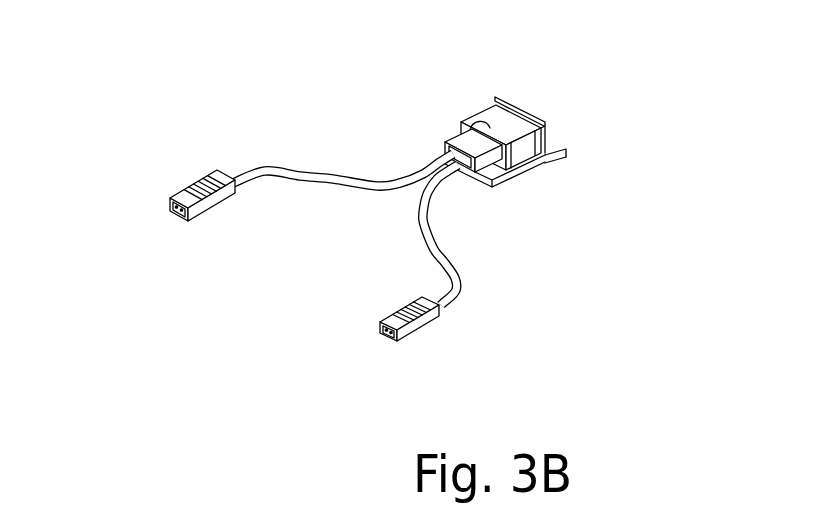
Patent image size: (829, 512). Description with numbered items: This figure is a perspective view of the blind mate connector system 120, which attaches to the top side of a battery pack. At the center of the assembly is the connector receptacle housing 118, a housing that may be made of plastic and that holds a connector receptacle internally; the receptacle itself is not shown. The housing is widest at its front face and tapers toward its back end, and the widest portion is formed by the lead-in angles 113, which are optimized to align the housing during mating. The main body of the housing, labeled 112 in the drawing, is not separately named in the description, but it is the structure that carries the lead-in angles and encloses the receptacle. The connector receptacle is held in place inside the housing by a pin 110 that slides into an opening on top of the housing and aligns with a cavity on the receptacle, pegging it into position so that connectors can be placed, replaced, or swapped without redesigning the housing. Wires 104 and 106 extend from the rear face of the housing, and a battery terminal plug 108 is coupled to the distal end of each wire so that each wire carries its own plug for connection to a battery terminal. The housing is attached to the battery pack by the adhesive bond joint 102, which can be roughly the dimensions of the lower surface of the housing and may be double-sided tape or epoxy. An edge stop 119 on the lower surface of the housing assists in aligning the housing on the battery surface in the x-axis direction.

The adhesive bond joint 102 is at (517, 182).
The wire 104 is at (480, 293).
The wire 106 is at (316, 173).
The battery terminal plug 108 is at (177, 190).
The pin 110 is at (479, 116).
The housing body 112 is at (523, 112).
The lead-in angles 113 is at (494, 100).
The connector receptacle housing 118 is at (552, 147).
The edge stop 119 is at (563, 160).
The blind mate connector system 120 is at (588, 229).